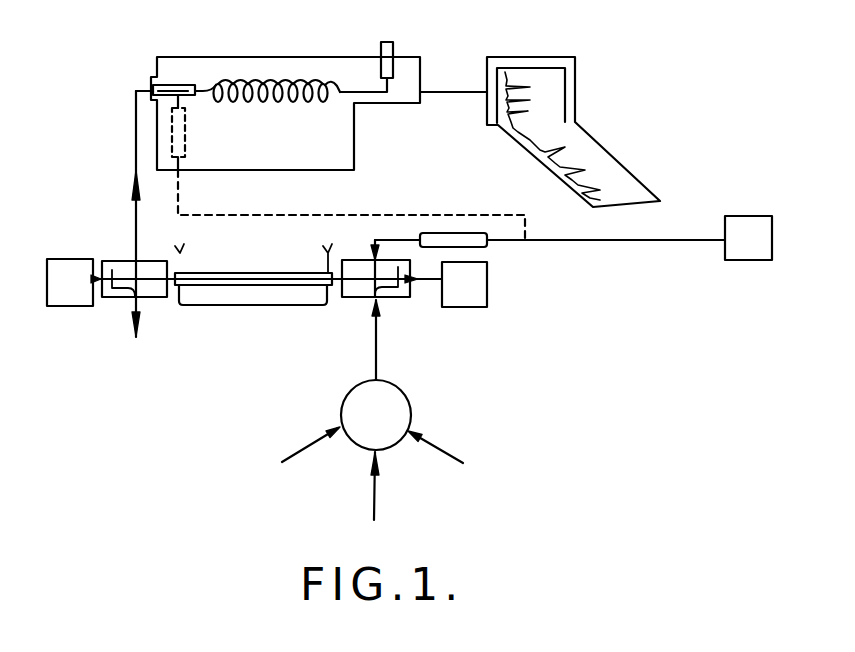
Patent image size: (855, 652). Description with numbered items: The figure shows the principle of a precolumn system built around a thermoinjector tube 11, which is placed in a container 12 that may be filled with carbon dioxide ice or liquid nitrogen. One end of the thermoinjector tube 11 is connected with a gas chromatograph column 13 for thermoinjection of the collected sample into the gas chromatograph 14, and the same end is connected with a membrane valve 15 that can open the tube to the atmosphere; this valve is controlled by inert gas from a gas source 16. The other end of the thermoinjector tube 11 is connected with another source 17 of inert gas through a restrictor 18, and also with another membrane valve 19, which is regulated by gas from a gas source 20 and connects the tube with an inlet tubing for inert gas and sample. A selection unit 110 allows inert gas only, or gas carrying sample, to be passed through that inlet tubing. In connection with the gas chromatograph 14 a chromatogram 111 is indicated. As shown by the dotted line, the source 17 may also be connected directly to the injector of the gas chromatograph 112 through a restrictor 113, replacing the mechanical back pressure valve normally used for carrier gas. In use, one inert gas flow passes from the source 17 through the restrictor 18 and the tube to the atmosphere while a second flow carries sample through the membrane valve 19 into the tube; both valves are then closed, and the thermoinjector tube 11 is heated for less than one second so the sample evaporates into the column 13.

The thermoinjector tube 11 is at (235, 277).
The container 12 is at (180, 273).
The gas chromatograph column 13 is at (270, 80).
The gas chromatograph 14 is at (355, 157).
The membrane valve 15 is at (108, 261).
The gas source 16 is at (70, 249).
The source of inert gas 17 is at (748, 223).
The restrictor 18 is at (452, 236).
The membrane valve 19 is at (352, 253).
The gas source 20 is at (487, 290).
The selection unit 110 is at (375, 410).
The chromatogram 111 is at (600, 150).
The injector of the gas chromatograph 112 is at (174, 86).
The restrictor 113 is at (186, 142).